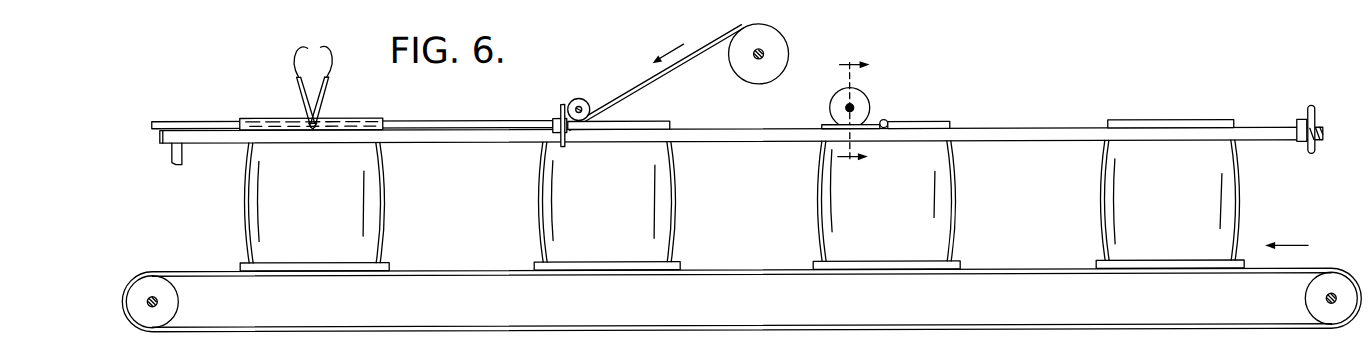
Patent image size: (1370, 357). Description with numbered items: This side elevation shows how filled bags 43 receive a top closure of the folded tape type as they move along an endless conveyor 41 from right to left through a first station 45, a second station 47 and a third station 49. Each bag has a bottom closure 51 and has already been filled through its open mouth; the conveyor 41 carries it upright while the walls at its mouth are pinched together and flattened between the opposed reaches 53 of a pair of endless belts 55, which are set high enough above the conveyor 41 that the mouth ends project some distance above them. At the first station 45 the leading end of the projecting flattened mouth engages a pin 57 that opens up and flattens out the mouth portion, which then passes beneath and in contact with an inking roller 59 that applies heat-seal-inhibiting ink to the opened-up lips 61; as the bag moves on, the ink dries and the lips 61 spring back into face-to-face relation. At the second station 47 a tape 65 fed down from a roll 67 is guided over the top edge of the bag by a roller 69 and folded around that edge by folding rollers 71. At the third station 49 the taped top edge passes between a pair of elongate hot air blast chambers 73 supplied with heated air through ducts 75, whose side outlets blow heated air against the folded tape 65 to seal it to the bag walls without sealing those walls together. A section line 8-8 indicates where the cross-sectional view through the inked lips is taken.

The endless conveyor 41 is at (136, 264).
The filled bags 43 is at (392, 206).
The first station 45 is at (909, 87).
The second station 47 is at (581, 88).
The third station 49 is at (276, 98).
The bottom closure 51 is at (304, 269).
The opposed reaches 53 is at (481, 99).
The endless belts 55 is at (207, 142).
The pin 57 is at (889, 119).
The inking roller 59 is at (836, 96).
The lips 61 is at (659, 122).
The tape 65 is at (673, 67).
The roll 67 is at (755, 80).
The roller 69 is at (569, 98).
The folding rollers 71 is at (549, 117).
The hot air blast chambers 73 is at (248, 116).
The ducts 75 is at (313, 82).
The section line 8- 8 is at (851, 113).